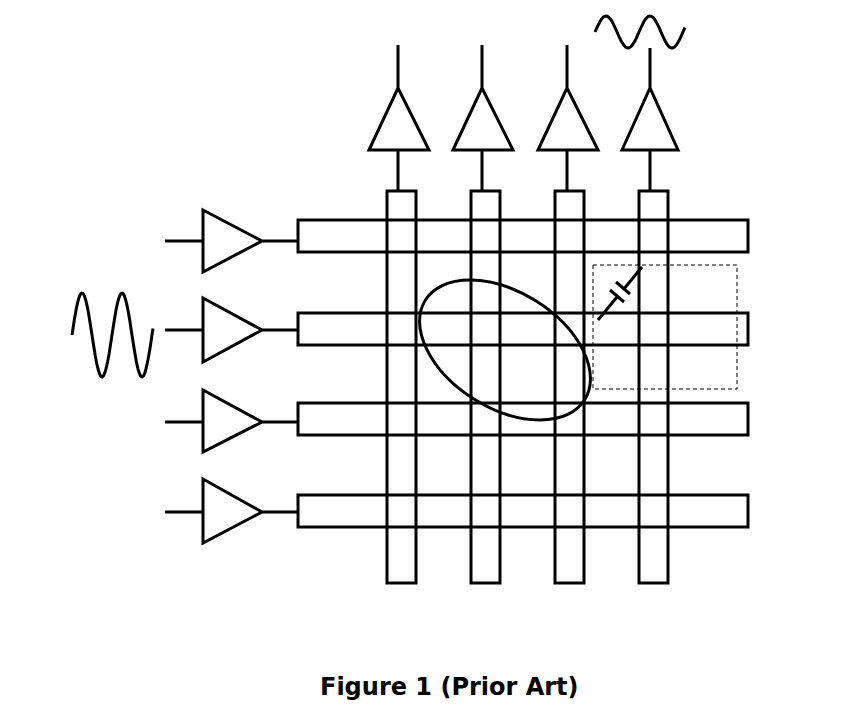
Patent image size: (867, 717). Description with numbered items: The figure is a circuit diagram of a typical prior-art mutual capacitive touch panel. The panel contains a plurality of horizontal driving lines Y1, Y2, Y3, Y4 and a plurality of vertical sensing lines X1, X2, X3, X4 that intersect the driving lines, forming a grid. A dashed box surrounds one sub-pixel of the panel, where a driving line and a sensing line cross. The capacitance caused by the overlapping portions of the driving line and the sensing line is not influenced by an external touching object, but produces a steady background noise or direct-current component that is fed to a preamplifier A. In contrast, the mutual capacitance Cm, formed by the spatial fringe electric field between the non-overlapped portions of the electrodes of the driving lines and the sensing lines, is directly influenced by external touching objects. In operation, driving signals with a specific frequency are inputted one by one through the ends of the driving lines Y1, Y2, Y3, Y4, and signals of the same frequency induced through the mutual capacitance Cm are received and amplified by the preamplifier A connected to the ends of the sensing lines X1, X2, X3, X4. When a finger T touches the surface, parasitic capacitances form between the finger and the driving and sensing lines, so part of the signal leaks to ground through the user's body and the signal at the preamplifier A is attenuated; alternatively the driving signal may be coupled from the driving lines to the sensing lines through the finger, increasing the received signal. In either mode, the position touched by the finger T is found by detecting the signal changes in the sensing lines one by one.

The preamplifier A is at (650, 137).
The finger T is at (445, 280).
The mutual capacitance Cm is at (665, 327).
The sensing line X1 is at (399, 409).
The sensing line X2 is at (484, 409).
The sensing line X3 is at (572, 409).
The sensing line X4 is at (656, 409).
The driving line Y1 is at (551, 236).
The driving line Y2 is at (551, 329).
The driving line Y3 is at (551, 419).
The driving line Y4 is at (551, 511).